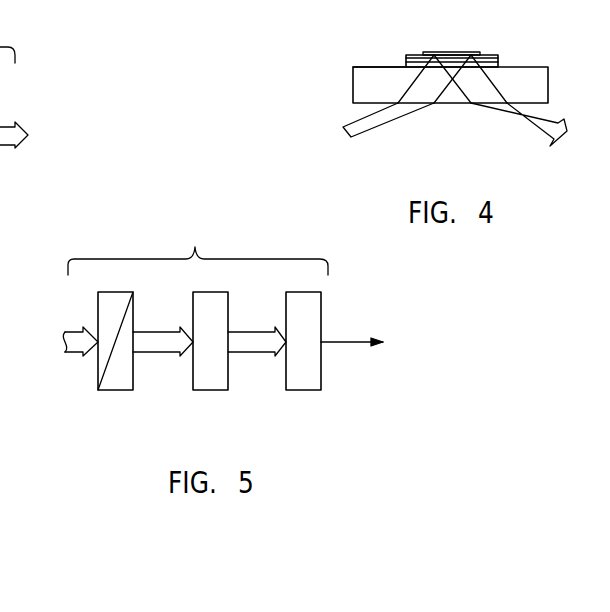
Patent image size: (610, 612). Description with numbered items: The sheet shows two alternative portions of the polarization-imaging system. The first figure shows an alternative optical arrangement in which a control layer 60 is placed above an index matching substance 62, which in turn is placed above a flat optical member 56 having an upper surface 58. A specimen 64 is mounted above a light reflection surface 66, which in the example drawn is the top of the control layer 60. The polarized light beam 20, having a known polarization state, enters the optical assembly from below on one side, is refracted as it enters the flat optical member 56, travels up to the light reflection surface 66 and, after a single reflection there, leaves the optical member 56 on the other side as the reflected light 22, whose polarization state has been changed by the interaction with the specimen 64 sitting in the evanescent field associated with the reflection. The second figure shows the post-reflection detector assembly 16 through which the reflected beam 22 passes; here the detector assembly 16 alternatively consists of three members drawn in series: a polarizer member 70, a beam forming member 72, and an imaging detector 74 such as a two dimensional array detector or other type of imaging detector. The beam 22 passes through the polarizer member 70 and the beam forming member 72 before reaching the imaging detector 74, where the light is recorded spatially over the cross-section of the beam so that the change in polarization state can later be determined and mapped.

In FIG. 5, the detector assembly 16 is at (198, 246).
In FIG. 4, the polarized light beam 20 is at (380, 125).
In FIG. 4, the reflected light 22 is at (522, 127).
In FIG. 5, the reflected light 22 is at (72, 354).
In FIG. 4, the flat optical member 56 is at (550, 83).
In FIG. 4, the upper surface 58 is at (363, 68).
In FIG. 4, the control layer 60 is at (493, 54).
In FIG. 4, the index matching substance 62 is at (493, 70).
In FIG. 4, the specimen 64 is at (440, 52).
In FIG. 4, the light reflection surface 66 is at (407, 55).
In FIG. 5, the polarizer member 70 is at (122, 391).
In FIG. 5, the beam forming member 72 is at (220, 391).
In FIG. 5, the imaging detector 74 is at (313, 391).